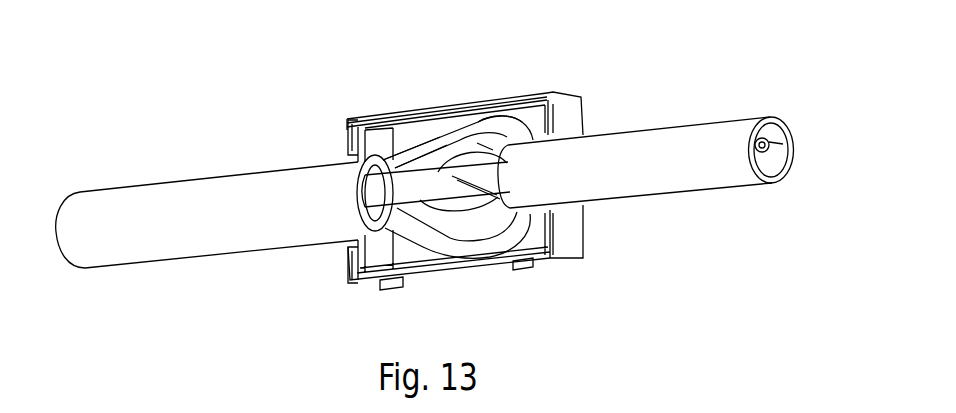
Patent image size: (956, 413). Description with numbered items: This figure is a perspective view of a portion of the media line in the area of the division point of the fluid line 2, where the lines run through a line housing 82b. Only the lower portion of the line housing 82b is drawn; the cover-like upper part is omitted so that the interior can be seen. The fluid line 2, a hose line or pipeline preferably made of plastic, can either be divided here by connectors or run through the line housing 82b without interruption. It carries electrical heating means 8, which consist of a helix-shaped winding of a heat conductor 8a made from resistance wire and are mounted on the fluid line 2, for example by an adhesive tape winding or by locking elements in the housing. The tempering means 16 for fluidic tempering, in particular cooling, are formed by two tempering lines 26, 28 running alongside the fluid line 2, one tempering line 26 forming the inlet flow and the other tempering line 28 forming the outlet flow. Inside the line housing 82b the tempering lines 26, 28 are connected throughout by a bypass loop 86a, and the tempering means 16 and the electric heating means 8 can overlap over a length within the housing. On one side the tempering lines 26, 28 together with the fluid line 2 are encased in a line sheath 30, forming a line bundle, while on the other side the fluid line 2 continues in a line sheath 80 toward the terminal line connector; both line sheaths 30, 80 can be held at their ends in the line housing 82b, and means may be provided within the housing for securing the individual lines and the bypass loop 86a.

The fluid line 2 is at (483, 180).
The electrical heating means 8 is at (792, 145).
The heat conductor 8a is at (453, 177).
The tempering means 16 is at (425, 259).
The tempering line 26 is at (415, 165).
The tempering line 28 is at (393, 217).
The line sheath 30 is at (115, 220).
The line sheath 80 is at (701, 171).
The line housing 82b is at (573, 232).
The bypass loop 86a is at (502, 133).